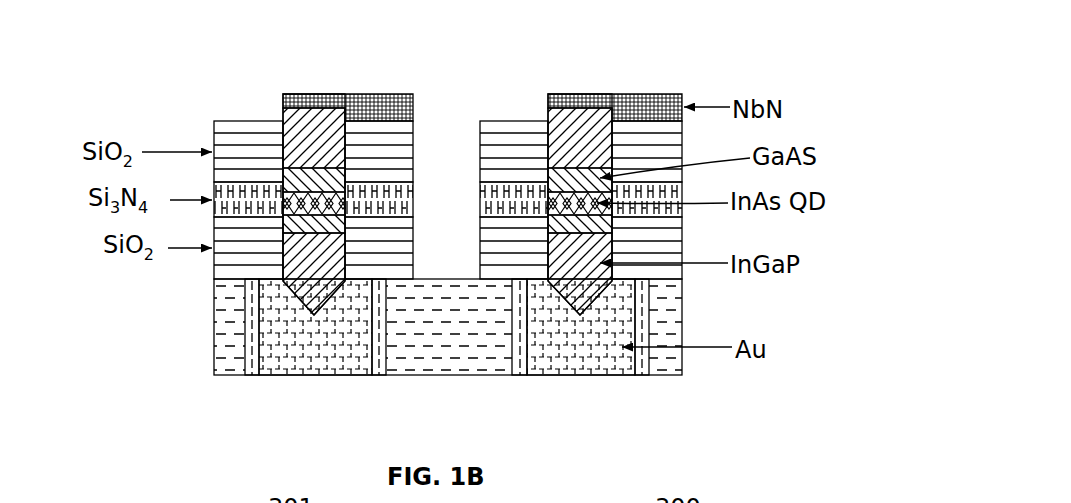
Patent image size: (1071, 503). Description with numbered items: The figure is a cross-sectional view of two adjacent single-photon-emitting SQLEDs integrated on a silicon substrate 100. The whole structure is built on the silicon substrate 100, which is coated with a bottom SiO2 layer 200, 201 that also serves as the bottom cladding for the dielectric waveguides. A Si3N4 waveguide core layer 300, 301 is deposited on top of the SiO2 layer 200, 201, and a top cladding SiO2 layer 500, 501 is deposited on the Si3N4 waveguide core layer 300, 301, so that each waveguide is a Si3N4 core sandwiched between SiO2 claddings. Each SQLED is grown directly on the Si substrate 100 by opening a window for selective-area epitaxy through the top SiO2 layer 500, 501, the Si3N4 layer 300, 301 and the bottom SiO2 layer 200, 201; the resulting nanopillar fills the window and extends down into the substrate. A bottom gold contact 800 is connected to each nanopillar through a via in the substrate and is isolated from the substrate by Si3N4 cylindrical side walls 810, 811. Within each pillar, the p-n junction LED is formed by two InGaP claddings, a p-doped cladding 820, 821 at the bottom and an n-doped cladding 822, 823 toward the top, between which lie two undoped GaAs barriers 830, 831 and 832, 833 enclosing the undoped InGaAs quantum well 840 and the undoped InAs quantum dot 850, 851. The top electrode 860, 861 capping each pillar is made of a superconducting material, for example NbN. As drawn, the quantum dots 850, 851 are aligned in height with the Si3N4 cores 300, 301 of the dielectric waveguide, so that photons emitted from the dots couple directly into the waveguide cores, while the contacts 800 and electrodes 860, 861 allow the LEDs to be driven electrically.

The silicon substrate 100 is at (225, 348).
The SiO2 layer 200 is at (508, 247).
The SiO2 layer 201 is at (225, 260).
The Si3N4 waveguide core layer 300 is at (502, 207).
The Si3N4 waveguide core layer 301 is at (225, 206).
The top cladding SiO2 layer 500 is at (518, 127).
The top cladding SiO2 layer 501 is at (240, 126).
The bottom gold contact 800 is at (318, 372).
The Si3N4 cylindrical side wall 810 is at (518, 374).
The Si3N4 cylindrical side wall 811 is at (252, 375).
The p-doped InGaP cladding 820 is at (585, 288).
The p-doped InGaP cladding 821 is at (284, 268).
The n-doped InGaP cladding 822 is at (612, 156).
The n-doped InGaP cladding 823 is at (285, 133).
The undoped GaAs barrier 830 is at (613, 222).
The undoped GaAs barrier 831 is at (607, 186).
The undoped GaAs barrier 832 is at (285, 227).
The undoped GaAs barrier 833 is at (282, 190).
The undoped InGaAs quantum well 840 is at (284, 203).
The undoped InAs quantum dot 850 is at (582, 198).
The undoped InAs quantum dot 851 is at (316, 200).
The top electrode 860 is at (658, 105).
The top electrode 861 is at (298, 93).